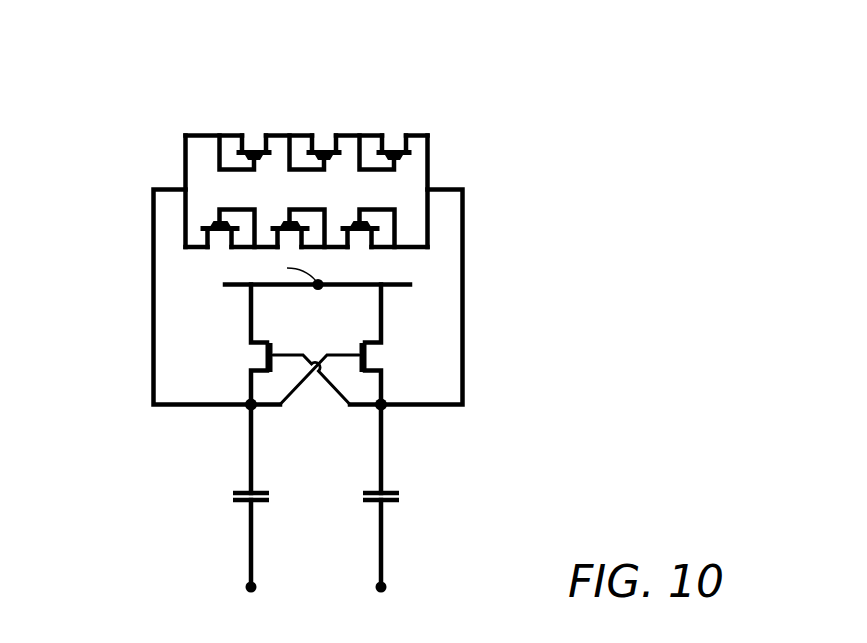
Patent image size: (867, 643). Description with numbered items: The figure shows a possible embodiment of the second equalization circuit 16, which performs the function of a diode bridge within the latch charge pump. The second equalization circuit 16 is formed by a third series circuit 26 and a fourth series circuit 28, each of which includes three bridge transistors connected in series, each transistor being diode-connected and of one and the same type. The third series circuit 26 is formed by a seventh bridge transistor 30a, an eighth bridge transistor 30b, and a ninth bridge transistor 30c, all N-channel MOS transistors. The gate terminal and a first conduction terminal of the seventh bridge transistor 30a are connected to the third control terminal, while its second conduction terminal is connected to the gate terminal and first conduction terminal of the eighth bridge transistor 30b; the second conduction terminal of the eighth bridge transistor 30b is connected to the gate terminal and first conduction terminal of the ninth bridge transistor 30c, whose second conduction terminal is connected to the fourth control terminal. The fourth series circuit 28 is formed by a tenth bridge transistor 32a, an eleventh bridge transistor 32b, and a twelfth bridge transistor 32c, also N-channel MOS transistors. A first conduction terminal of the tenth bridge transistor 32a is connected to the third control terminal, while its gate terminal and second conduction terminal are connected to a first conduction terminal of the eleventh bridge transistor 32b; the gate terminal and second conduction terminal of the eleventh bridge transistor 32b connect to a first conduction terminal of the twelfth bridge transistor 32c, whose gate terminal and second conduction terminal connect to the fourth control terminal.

The second equalization circuit 16 is at (452, 105).
The third series circuit 26 is at (225, 122).
The fourth series circuit 28 is at (190, 255).
The seventh bridge transistor 30a is at (255, 150).
The eighth bridge transistor 30b is at (324, 150).
The ninth bridge transistor 30c is at (393, 150).
The tenth bridge transistor 32a is at (219, 233).
The eleventh bridge transistor 32b is at (291, 233).
The twelfth bridge transistor 32c is at (360, 233).